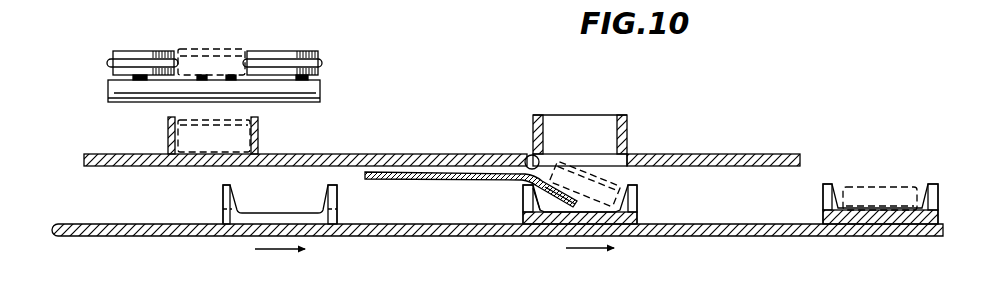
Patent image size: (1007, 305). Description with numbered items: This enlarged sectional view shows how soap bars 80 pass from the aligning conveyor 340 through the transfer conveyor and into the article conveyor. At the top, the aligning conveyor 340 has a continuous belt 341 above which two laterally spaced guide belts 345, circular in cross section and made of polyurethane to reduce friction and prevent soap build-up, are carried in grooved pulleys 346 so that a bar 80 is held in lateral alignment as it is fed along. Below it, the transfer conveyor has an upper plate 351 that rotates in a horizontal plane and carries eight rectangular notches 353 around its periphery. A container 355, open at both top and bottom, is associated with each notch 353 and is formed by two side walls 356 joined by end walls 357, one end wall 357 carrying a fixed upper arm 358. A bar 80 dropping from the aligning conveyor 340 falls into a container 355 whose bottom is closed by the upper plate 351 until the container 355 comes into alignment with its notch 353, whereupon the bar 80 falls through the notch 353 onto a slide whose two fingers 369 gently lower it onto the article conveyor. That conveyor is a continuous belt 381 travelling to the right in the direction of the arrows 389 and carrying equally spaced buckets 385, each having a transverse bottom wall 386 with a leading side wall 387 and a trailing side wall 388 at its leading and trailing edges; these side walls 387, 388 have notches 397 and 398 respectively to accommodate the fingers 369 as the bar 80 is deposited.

The aligning conveyor 340 is at (198, 72).
The continuous belt 341 is at (121, 100).
The guide belts 345 is at (107, 65).
The pulleys 346 is at (129, 51).
The bars 80 is at (206, 48).
The upper plate 351 is at (747, 155).
The rectangular notches 353 is at (525, 158).
The container 355 is at (398, 134).
The side walls 356 is at (167, 143).
The end walls 357 is at (178, 117).
The upper arm 358 is at (497, 180).
The fingers 369 is at (563, 203).
The continuous belt 381 is at (78, 234).
The buckets 385 is at (538, 213).
The bottom wall 386 is at (250, 222).
The leading side wall 387 is at (337, 198).
The trailing side wall 388 is at (222, 193).
The arrows 389 is at (576, 251).
The notch 397 is at (623, 188).
The notch 398 is at (527, 193).